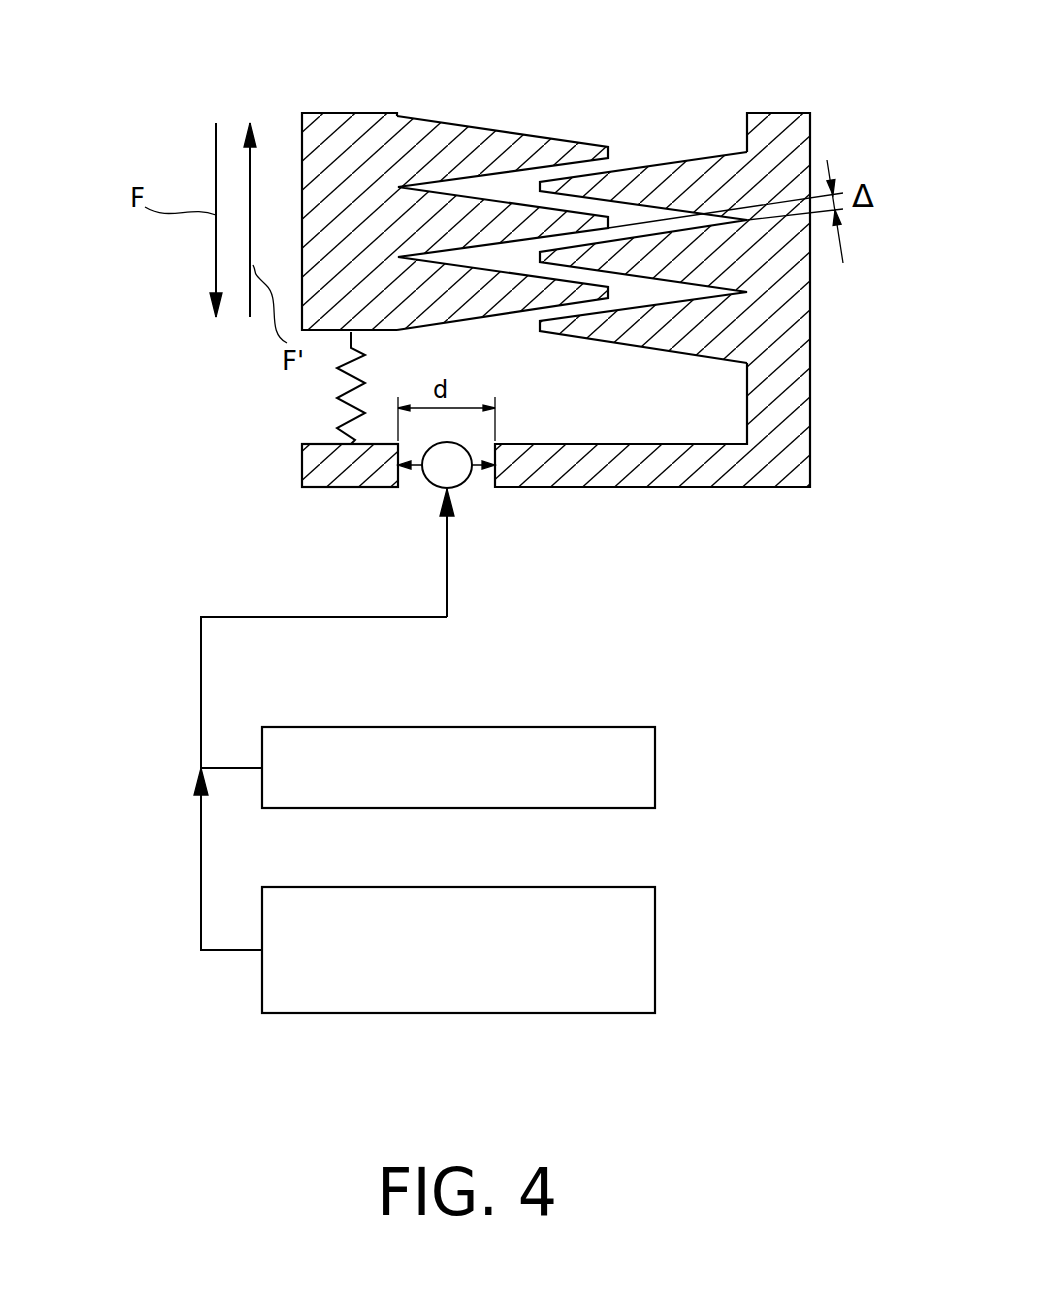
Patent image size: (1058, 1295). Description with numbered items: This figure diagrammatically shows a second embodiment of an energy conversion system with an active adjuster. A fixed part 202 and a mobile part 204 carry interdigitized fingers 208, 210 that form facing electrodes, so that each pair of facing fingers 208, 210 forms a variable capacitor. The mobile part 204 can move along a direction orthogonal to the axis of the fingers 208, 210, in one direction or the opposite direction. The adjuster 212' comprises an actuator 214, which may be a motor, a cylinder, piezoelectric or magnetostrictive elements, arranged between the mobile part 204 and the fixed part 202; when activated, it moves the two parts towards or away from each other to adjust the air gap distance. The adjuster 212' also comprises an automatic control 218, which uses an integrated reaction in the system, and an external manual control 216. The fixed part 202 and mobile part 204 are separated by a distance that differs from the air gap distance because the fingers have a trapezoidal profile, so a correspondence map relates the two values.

The fixed part 202 is at (780, 381).
The mobile part 204 is at (360, 133).
The interdigitized fingers 208 is at (698, 178).
The interdigitized fingers 210 is at (487, 148).
The adjuster 212' is at (238, 719).
The actuator 214 is at (458, 475).
The external manual control 216 is at (627, 772).
The automatic control 218 is at (627, 957).